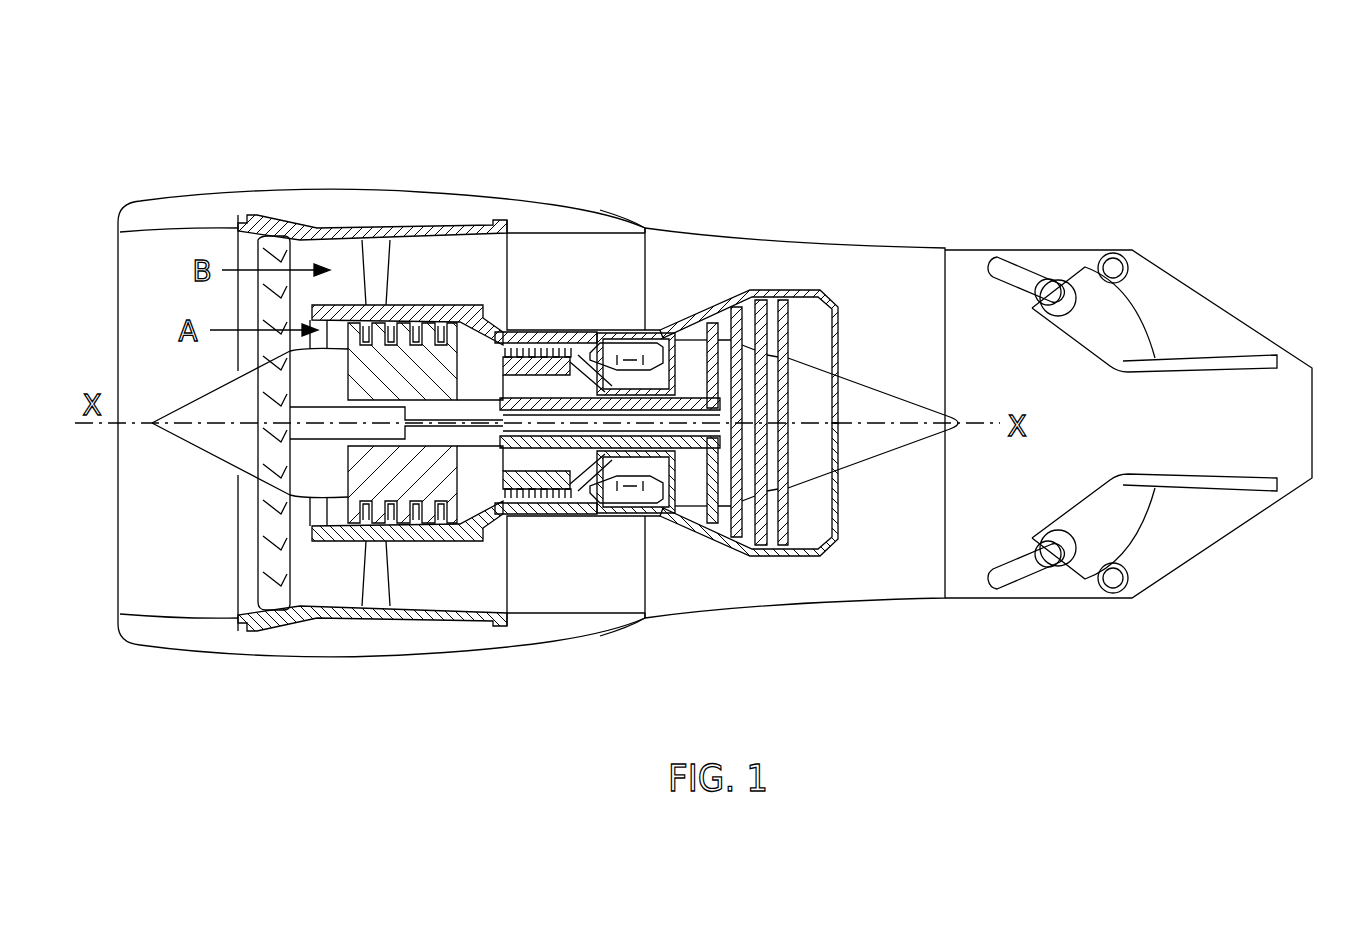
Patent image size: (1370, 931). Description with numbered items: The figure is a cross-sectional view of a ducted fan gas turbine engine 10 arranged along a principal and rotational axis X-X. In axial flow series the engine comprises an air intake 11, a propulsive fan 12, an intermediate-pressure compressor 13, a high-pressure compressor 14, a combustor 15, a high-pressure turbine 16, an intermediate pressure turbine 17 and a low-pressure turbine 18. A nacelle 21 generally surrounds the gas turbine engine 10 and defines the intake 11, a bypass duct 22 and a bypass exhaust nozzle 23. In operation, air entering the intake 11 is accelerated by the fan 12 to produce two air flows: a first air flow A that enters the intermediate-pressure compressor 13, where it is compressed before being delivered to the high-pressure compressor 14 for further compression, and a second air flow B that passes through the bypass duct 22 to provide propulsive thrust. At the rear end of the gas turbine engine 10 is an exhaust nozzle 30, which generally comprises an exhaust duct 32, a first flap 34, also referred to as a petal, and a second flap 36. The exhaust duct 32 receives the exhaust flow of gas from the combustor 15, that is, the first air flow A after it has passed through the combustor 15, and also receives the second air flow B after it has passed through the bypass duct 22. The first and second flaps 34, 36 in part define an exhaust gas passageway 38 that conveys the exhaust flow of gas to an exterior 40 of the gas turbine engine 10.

The ducted fan gas turbine engine 10 is at (172, 158).
The air intake 11 is at (175, 232).
The propulsive fan 12 is at (262, 566).
The intermediate-pressure compressor 13 is at (425, 522).
The high-pressure compressor 14 is at (550, 347).
The combustor 15 is at (609, 500).
The high-pressure turbine 16 is at (645, 532).
The intermediate pressure turbine 17 is at (712, 342).
The low-pressure turbine 18 is at (722, 538).
The nacelle 21 is at (427, 205).
The bypass duct 22 is at (578, 278).
The bypass exhaust nozzle 23 is at (647, 226).
The exhaust nozzle 30 is at (1006, 395).
The exhaust duct 32 is at (965, 600).
The first flap 34 is at (1220, 352).
The second flap 36 is at (1212, 492).
The exhaust gas passageway 38 is at (1178, 436).
The exterior 40 is at (1333, 436).